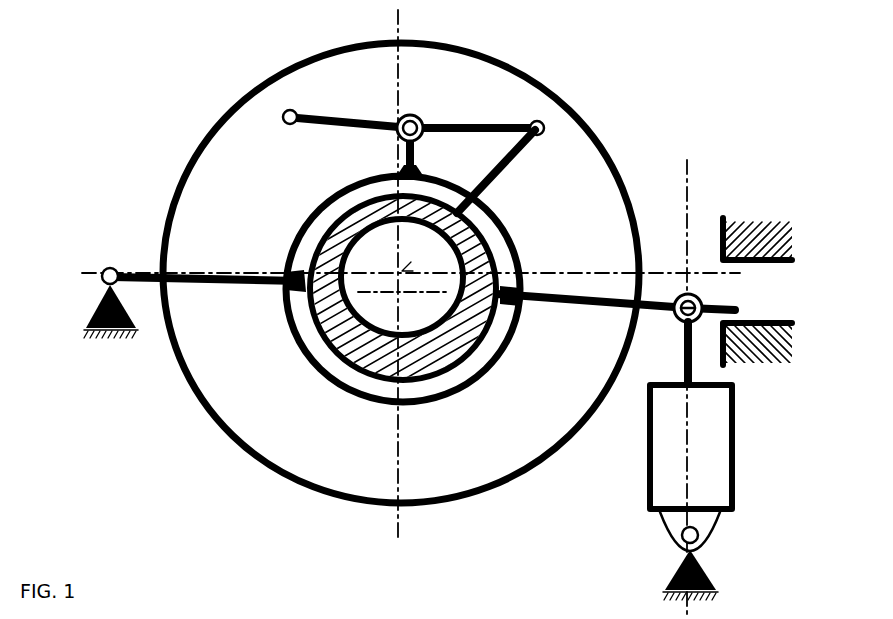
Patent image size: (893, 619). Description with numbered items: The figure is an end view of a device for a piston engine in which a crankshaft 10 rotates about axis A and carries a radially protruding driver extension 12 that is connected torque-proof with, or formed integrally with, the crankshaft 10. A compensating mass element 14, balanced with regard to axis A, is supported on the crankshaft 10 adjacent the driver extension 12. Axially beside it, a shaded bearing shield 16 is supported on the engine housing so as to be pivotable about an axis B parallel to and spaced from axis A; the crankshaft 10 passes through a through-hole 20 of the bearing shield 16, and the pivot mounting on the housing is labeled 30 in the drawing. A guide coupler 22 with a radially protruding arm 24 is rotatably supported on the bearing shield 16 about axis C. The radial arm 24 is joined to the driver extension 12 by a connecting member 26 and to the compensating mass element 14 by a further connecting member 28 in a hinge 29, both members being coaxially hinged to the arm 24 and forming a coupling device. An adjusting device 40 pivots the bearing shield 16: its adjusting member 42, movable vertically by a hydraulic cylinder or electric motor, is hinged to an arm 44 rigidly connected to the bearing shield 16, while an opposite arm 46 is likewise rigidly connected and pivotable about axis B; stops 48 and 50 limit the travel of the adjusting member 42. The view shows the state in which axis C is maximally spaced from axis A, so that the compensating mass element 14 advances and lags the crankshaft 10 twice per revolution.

The crankshaft 10 is at (363, 253).
The driver extension 12 is at (503, 183).
The compensating mass element 14 is at (243, 395).
The bearing shield 16 is at (356, 362).
The through-hole 20 is at (427, 337).
The guide coupler 22 is at (385, 394).
The radial arm 24 is at (447, 122).
The connecting member 26 is at (492, 120).
The connecting member 28 is at (330, 115).
The hinge 29 is at (287, 110).
The fixed pivot support 30 is at (106, 270).
The adjusting device 40 is at (749, 429).
The adjusting member 42 is at (683, 362).
The arm 44 is at (598, 297).
The arm 46 is at (193, 285).
The stop 48 is at (745, 242).
The stop 50 is at (766, 345).